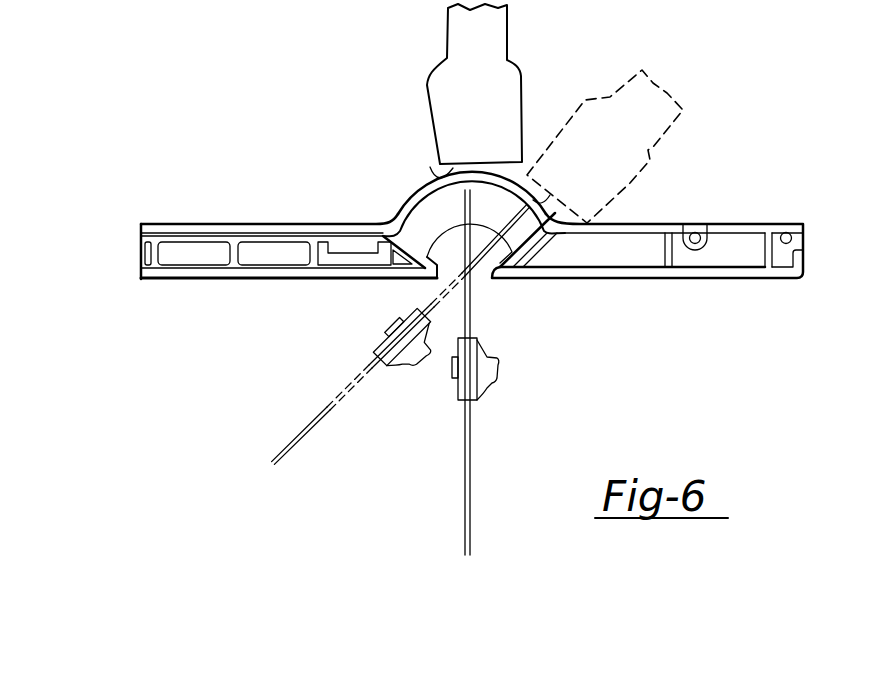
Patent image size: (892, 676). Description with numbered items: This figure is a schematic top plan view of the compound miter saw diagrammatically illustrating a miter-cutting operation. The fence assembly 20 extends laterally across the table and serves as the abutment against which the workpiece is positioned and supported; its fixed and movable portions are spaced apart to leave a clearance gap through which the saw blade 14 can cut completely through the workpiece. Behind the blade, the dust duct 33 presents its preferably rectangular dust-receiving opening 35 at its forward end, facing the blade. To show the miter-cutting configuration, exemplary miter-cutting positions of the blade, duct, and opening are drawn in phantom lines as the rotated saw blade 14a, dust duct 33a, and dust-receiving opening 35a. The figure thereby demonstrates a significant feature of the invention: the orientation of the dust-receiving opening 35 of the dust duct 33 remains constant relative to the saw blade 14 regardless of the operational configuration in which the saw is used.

The fence assembly 20 is at (222, 282).
The dust duct 33 is at (500, 103).
The miter-cutting position of the dust duct 33a is at (653, 113).
The dust-receiving opening 35 is at (428, 172).
The miter-cutting position of the dust-receiving opening 35a is at (553, 191).
The saw blade 14 is at (471, 476).
The miter-cutting position of the saw blade 14a is at (318, 425).